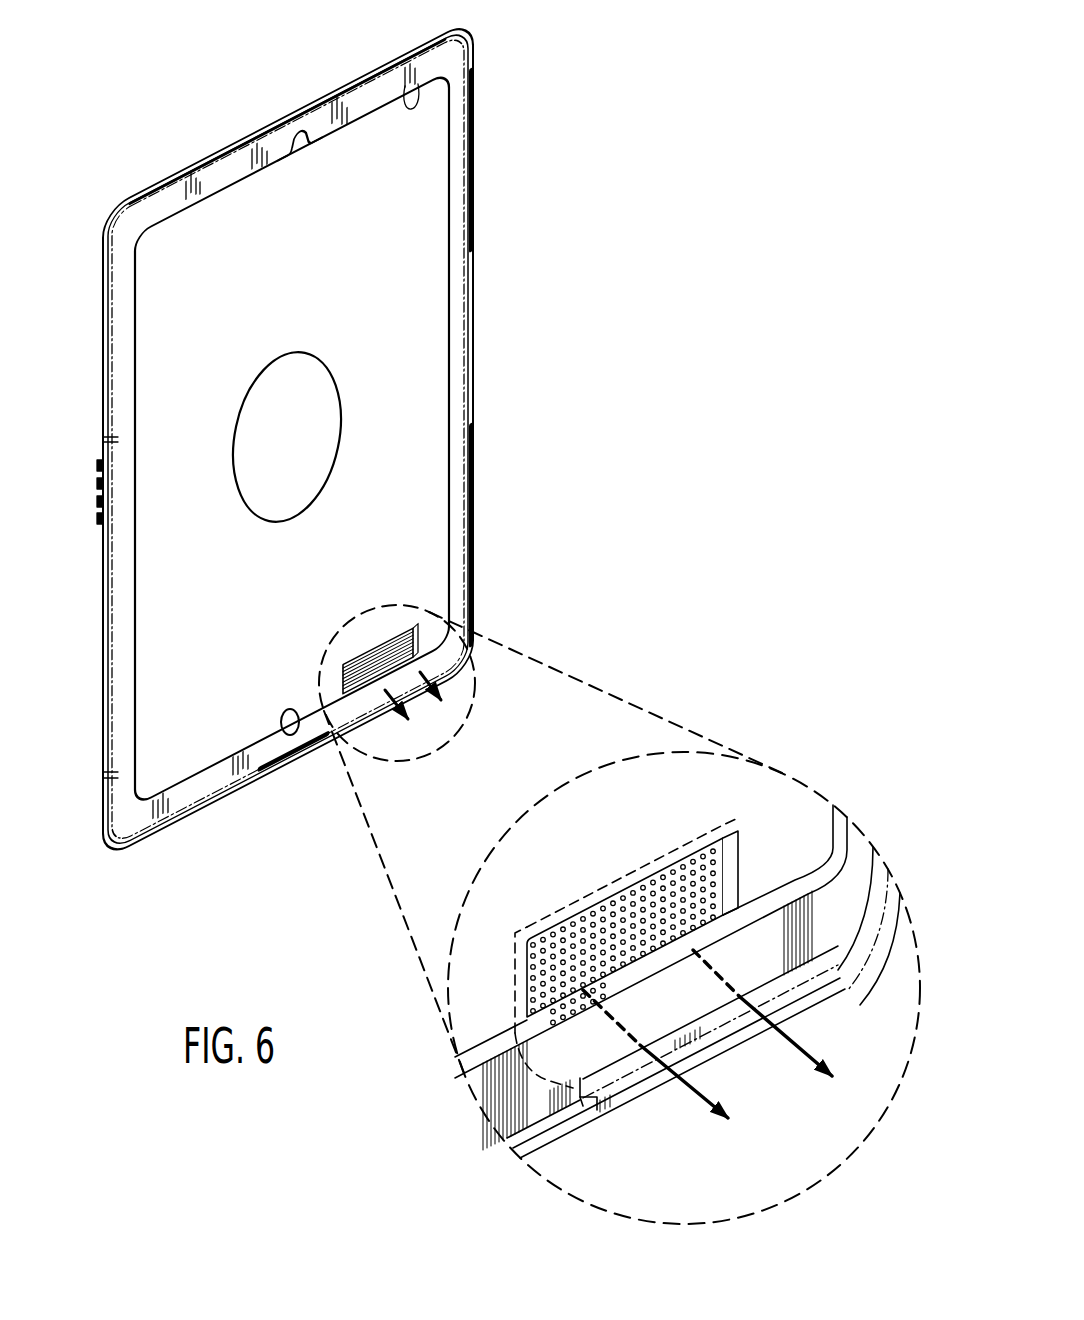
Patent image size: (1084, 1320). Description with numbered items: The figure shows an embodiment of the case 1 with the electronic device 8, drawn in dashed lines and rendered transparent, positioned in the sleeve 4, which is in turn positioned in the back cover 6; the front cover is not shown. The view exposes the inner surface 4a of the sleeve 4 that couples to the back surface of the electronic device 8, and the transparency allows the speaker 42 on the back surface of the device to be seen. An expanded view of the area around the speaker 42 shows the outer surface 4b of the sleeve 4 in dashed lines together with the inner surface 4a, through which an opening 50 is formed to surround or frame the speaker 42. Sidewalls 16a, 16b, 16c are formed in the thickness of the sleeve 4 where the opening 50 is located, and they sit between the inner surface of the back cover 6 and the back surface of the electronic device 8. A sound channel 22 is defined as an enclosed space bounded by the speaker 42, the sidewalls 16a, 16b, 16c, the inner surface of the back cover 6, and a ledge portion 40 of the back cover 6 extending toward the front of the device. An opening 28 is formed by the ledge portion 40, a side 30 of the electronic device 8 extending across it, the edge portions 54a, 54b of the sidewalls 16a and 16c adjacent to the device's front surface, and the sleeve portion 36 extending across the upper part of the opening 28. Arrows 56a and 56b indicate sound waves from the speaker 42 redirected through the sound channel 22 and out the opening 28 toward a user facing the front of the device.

The case 1 is at (514, 140).
The sleeve 4 is at (468, 605).
The inner surface of the sleeve 4a is at (420, 497).
The outer surface of the sleeve 4b is at (522, 928).
The back cover 6 is at (475, 615).
The electronic device 8 is at (472, 352).
The sidewall 16a is at (518, 990).
The sidewall 16b is at (655, 865).
The sidewall 16c is at (728, 892).
The sound channel 22 is at (718, 1018).
The opening 28 is at (623, 1064).
The side of the electronic device 30 is at (747, 1000).
The sleeve portion 36 is at (688, 1033).
The ledge portion 40 is at (603, 1093).
The speaker 42 is at (378, 648).
The opening in the sleeve 50 is at (740, 833).
The edge portion of the sidewall 54a is at (600, 1097).
The edge portion of the sidewall 54b is at (817, 1006).
The arrow 56a is at (730, 1135).
The arrow 56b is at (835, 1090).